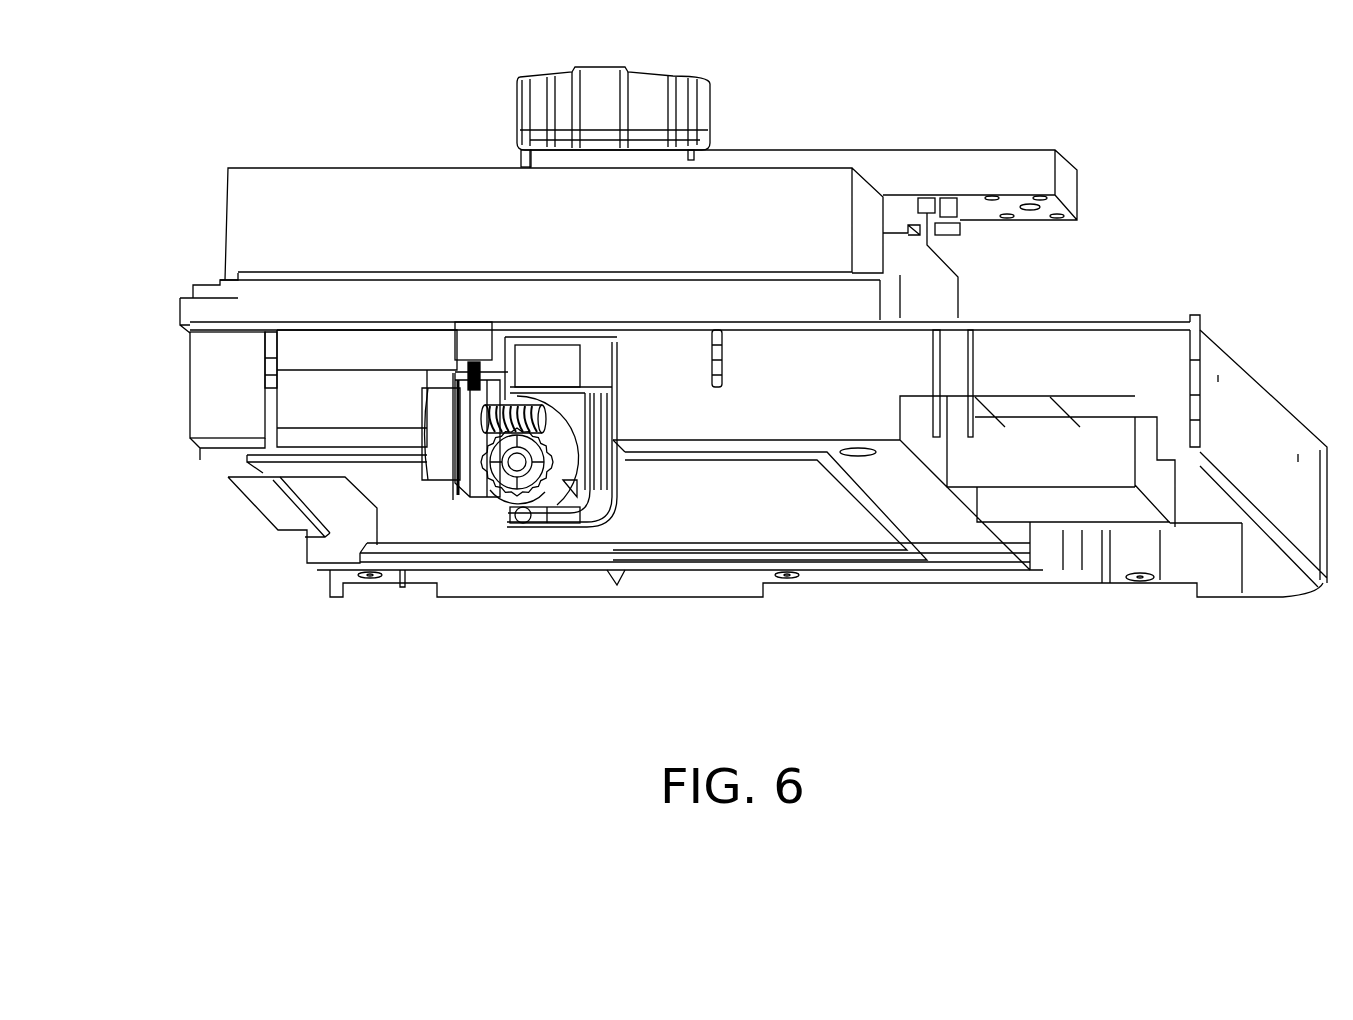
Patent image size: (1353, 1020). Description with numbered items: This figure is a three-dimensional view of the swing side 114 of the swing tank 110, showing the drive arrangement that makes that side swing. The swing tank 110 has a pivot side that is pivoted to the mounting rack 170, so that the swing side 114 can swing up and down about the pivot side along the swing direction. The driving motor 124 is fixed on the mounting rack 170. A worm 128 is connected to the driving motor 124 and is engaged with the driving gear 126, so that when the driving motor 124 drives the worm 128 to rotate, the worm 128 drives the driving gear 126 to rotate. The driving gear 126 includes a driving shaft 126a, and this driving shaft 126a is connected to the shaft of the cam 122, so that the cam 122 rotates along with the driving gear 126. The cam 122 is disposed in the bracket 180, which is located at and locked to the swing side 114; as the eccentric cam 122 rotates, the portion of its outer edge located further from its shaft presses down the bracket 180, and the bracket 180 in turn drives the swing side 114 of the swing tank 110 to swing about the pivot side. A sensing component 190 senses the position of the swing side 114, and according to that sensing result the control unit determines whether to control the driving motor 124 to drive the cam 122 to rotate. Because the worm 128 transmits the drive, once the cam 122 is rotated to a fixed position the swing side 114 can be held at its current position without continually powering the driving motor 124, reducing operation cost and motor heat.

The swing tank 110 is at (192, 223).
The swing side 114 is at (192, 308).
The mounting rack 170 is at (218, 382).
The driving motor 124 is at (309, 437).
The worm 128 is at (462, 417).
The driving gear 126 is at (505, 482).
The driving shaft 126a is at (516, 463).
The sensing component 190 is at (538, 517).
The bracket 180 is at (600, 527).
The cam 122 is at (625, 460).